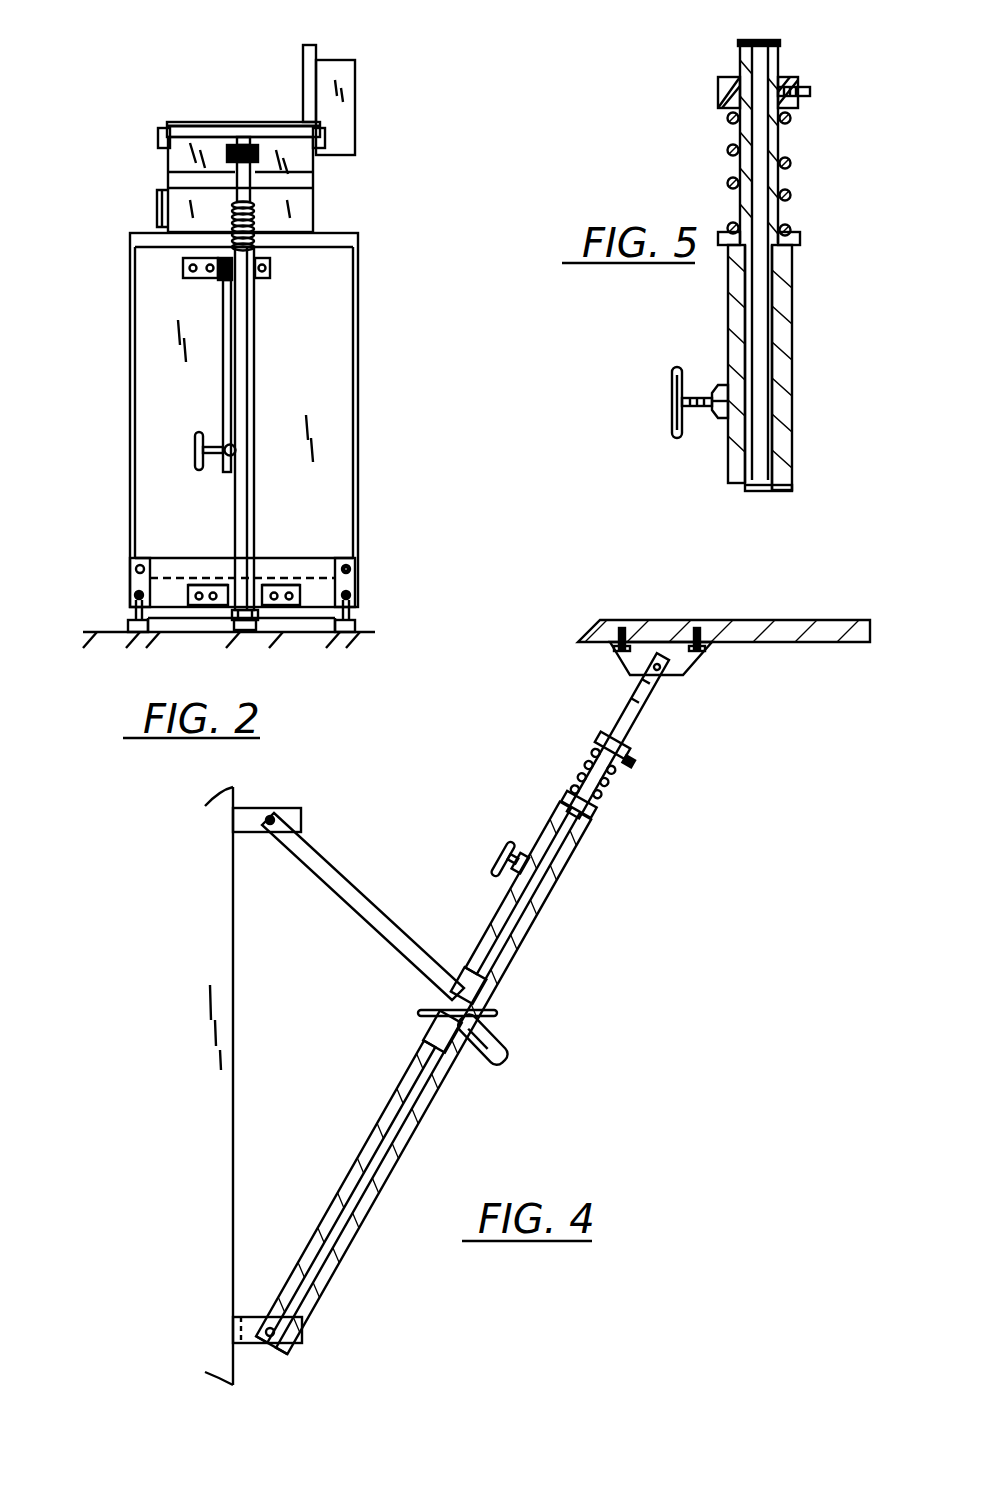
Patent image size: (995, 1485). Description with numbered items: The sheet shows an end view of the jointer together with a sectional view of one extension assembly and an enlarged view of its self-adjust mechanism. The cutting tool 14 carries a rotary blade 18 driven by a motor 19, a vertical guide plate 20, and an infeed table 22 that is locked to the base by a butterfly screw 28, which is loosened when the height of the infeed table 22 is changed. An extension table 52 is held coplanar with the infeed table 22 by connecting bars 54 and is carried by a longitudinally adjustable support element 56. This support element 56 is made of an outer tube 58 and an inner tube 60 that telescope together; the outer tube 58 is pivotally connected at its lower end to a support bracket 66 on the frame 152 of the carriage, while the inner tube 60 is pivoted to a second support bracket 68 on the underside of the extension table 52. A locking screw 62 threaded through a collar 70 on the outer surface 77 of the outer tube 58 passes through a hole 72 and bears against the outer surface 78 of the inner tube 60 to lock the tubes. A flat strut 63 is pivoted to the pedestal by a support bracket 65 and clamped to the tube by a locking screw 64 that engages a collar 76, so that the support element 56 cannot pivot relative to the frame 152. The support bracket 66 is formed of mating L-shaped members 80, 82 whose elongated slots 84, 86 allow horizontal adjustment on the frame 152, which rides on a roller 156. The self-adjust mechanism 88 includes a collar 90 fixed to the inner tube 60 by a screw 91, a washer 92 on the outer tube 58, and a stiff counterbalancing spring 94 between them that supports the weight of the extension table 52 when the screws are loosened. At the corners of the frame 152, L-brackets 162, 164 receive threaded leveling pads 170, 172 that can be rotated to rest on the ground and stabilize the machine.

In FIG. 2, the cutting tool 14 is at (155, 115).
In FIG. 2, the rotary blade 18 is at (189, 122).
In FIG. 2, the motor 19 is at (352, 62).
In FIG. 2, the vertical guide plate 20 is at (311, 45).
In FIG. 2, the infeed table 22 is at (247, 124).
In FIG. 2, the butterfly screw 28 is at (157, 208).
In FIG. 2, the extension table 52 is at (292, 140).
In FIG. 4, the extension table 52 is at (820, 620).
In FIG. 2, the connecting bar 54 is at (161, 140).
In FIG. 2, the support element 56 is at (262, 362).
In FIG. 4, the support element 56 is at (522, 990).
In FIG. 2, the outer tube 58 is at (254, 312).
In FIG. 5, the outer tube 58 is at (793, 462).
In FIG. 4, the outer tube 58 is at (414, 1122).
In FIG. 2, the inner tube 60 is at (236, 176).
In FIG. 5, the inner tube 60 is at (740, 130).
In FIG. 4, the inner tube 60 is at (650, 718).
In FIG. 5, the locking screw 62 is at (671, 381).
In FIG. 4, the locking screw 62 is at (504, 855).
In FIG. 2, the flat strut 63 is at (223, 392).
In FIG. 4, the flat strut 63 is at (347, 893).
In FIG. 2, the locking screw 64 is at (199, 445).
In FIG. 4, the locking screw 64 is at (482, 1013).
In FIG. 2, the support bracket 65 is at (196, 271).
In FIG. 4, the support bracket 65 is at (308, 813).
In FIG. 2, the support bracket 66 is at (176, 622).
In FIG. 4, the support bracket 66 is at (322, 1338).
In FIG. 2, the second support bracket 68 is at (227, 150).
In FIG. 4, the second support bracket 68 is at (700, 665).
In FIG. 5, the collar 70 is at (718, 420).
In FIG. 4, the collar 70 is at (528, 845).
In FIG. 5, the hole 72 is at (740, 400).
In FIG. 2, the collar 76 is at (236, 452).
In FIG. 4, the collar 76 is at (462, 996).
In FIG. 5, the outer surface 77 is at (793, 328).
In FIG. 4, the outer surface 77 is at (550, 897).
In FIG. 5, the outer surface 78 is at (792, 292).
In FIG. 4, the outer surface 78 is at (527, 935).
In FIG. 2, the L-shaped member 80 is at (200, 585).
In FIG. 2, the L-shaped member 82 is at (288, 588).
In FIG. 4, the L-shaped member 82 is at (304, 1320).
In FIG. 2, the elongated slot 84 is at (205, 607).
In FIG. 2, the elongated slot 86 is at (287, 607).
In FIG. 2, the self-adjust mechanism 88 is at (265, 221).
In FIG. 5, the self-adjust mechanism 88 is at (893, 150).
In FIG. 4, the self-adjust mechanism 88 is at (632, 812).
In FIG. 5, the collar 90 is at (800, 78).
In FIG. 4, the collar 90 is at (598, 736).
In FIG. 5, the screw 91 is at (812, 91).
In FIG. 4, the screw 91 is at (626, 758).
In FIG. 5, the washer 92 is at (800, 240).
In FIG. 4, the washer 92 is at (566, 795).
In FIG. 5, the counterbalancing spring 94 is at (790, 194).
In FIG. 4, the counterbalancing spring 94 is at (608, 781).
In FIG. 2, the frame 152 is at (350, 568).
In FIG. 4, the frame 152 is at (233, 1252).
In FIG. 2, the roller 156 is at (244, 632).
In FIG. 2, the L-bracket 162 is at (133, 577).
In FIG. 2, the L-bracket 164 is at (320, 597).
In FIG. 2, the leveling pad 170 is at (128, 625).
In FIG. 2, the leveling pad 172 is at (355, 625).